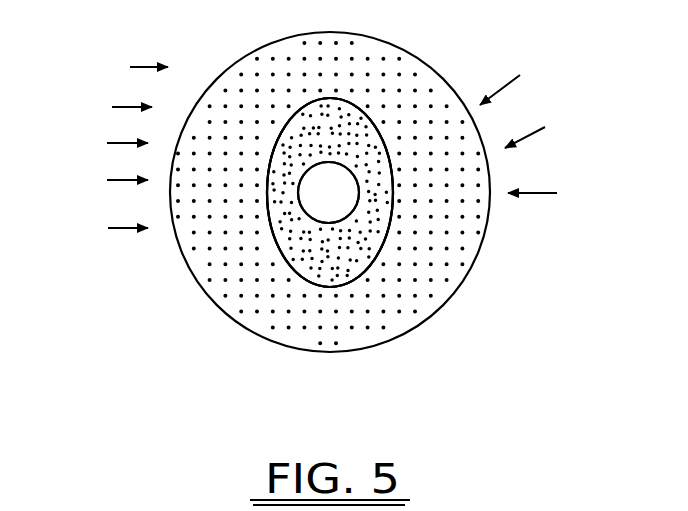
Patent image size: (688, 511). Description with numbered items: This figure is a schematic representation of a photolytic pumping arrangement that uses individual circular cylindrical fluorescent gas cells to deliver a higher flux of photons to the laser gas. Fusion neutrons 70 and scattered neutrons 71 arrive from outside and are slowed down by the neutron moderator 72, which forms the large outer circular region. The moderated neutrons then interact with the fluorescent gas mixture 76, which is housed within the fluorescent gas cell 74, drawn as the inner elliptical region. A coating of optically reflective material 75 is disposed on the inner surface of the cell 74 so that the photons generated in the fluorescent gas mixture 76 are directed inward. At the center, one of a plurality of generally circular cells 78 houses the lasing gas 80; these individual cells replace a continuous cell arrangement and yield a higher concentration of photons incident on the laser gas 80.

The fusion neutrons 70 is at (120, 143).
The scattered neutrons 71 is at (525, 140).
The neutron moderator 72 is at (330, 213).
The fluorescent gas cell 74 is at (303, 283).
The coating of optically reflective material 75 is at (289, 231).
The fluorescent gas mixture 76 is at (391, 225).
The circular cell 78 is at (237, 235).
The lasing gas 80 is at (430, 219).